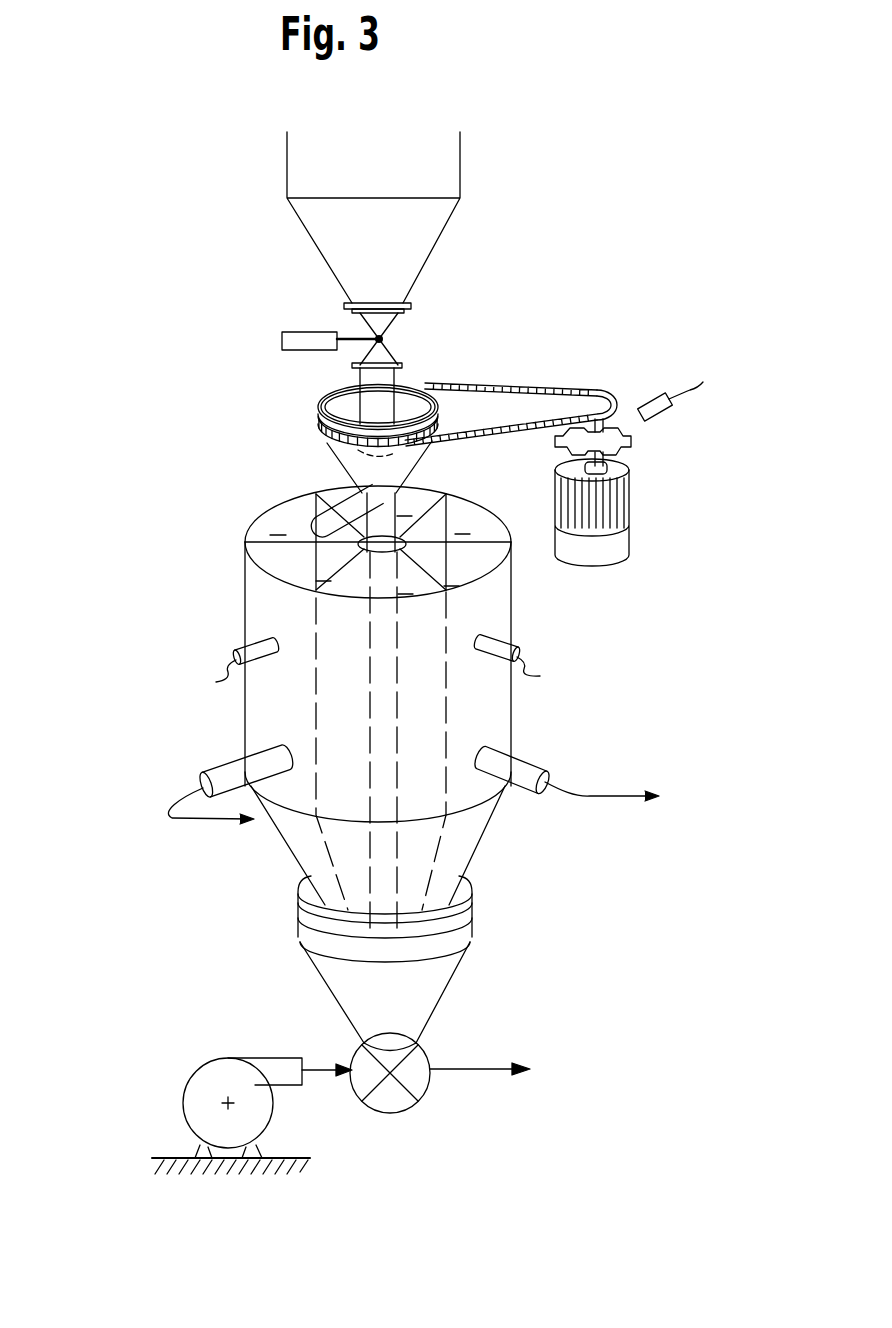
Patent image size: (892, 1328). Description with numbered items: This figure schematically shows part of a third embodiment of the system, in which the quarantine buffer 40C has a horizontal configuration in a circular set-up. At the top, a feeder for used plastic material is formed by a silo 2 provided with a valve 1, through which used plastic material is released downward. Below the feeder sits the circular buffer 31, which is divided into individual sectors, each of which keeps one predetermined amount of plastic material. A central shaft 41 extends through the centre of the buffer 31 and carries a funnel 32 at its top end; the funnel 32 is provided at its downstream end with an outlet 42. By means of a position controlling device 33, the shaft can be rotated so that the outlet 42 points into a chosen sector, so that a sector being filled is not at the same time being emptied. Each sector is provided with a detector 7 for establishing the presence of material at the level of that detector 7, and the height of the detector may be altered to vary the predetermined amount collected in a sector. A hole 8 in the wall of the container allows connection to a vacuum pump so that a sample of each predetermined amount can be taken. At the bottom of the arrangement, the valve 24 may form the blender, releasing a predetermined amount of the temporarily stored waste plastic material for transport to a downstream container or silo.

The silo 2 is at (287, 158).
The valve 1 is at (385, 339).
The position controlling device 33 is at (626, 390).
The funnel 32 is at (340, 446).
The quarantine buffer 40C is at (234, 516).
The circular buffer 31 is at (245, 580).
The central shaft 41 is at (374, 688).
The outlet 42 is at (309, 572).
The detector 7 is at (256, 643).
The hole 8 is at (218, 771).
The valve 24 is at (401, 1105).